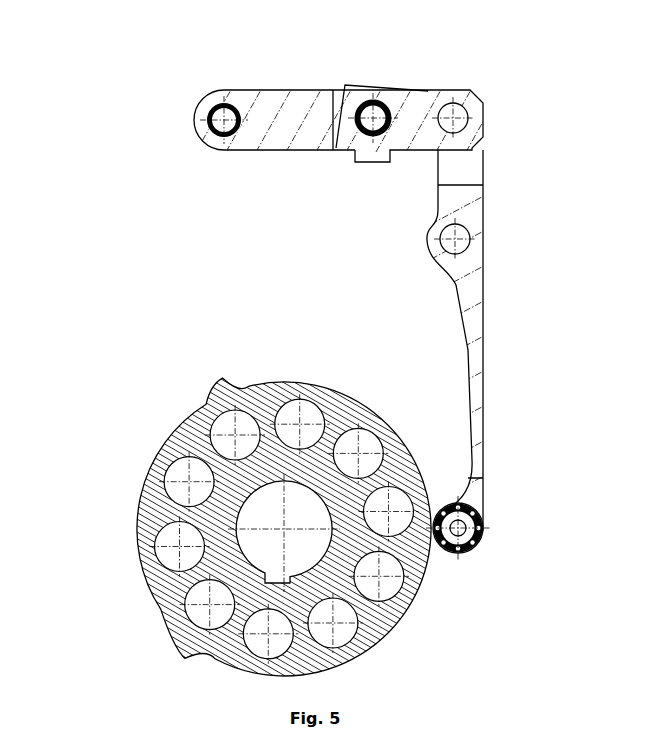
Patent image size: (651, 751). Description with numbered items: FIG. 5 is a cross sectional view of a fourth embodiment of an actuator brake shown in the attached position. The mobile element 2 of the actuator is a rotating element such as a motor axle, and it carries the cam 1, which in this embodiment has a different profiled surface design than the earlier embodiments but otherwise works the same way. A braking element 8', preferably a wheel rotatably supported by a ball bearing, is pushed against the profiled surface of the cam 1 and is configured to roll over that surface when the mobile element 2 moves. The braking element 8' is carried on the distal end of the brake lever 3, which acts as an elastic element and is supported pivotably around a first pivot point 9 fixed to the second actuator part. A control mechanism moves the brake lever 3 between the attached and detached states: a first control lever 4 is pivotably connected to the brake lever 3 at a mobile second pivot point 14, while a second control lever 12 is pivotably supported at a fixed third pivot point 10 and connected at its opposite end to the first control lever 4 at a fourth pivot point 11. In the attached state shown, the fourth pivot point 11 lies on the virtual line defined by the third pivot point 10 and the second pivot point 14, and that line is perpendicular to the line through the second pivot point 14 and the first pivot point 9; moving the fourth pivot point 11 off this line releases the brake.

The cam 1 is at (135, 530).
The mobile element 2 is at (236, 553).
The brake lever 3 is at (495, 448).
The first control lever 4 is at (415, 107).
The braking element 8' is at (499, 547).
The first pivot point 9 is at (455, 239).
The third pivot point 10 is at (208, 105).
The fourth pivot point 11 is at (377, 108).
The second control lever 12 is at (287, 105).
The second pivot point 14 is at (453, 118).